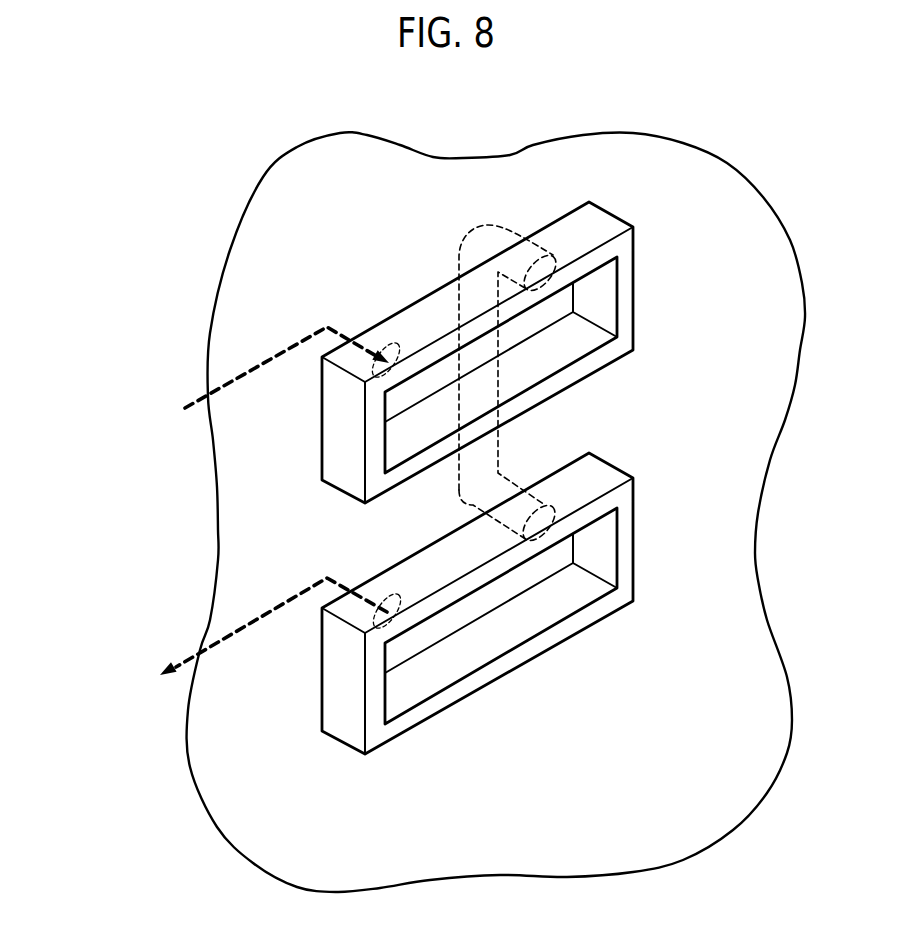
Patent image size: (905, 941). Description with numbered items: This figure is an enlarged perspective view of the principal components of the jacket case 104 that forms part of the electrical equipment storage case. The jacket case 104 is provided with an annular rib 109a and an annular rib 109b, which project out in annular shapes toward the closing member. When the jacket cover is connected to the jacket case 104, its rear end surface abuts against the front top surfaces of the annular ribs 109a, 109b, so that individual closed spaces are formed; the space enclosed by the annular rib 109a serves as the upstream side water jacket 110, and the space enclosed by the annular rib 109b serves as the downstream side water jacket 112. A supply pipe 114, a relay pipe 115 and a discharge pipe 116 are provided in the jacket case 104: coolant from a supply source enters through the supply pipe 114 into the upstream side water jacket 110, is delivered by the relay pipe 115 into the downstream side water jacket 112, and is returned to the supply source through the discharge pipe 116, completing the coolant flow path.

The jacket case 104 is at (703, 180).
The annular rib 109a is at (520, 352).
The annular rib 109b is at (523, 603).
The upstream side water jacket 110 is at (525, 323).
The downstream side water jacket 112 is at (525, 573).
The relay pipe 115 is at (482, 487).
The supply pipe 114 is at (236, 379).
The discharge pipe 116 is at (236, 636).